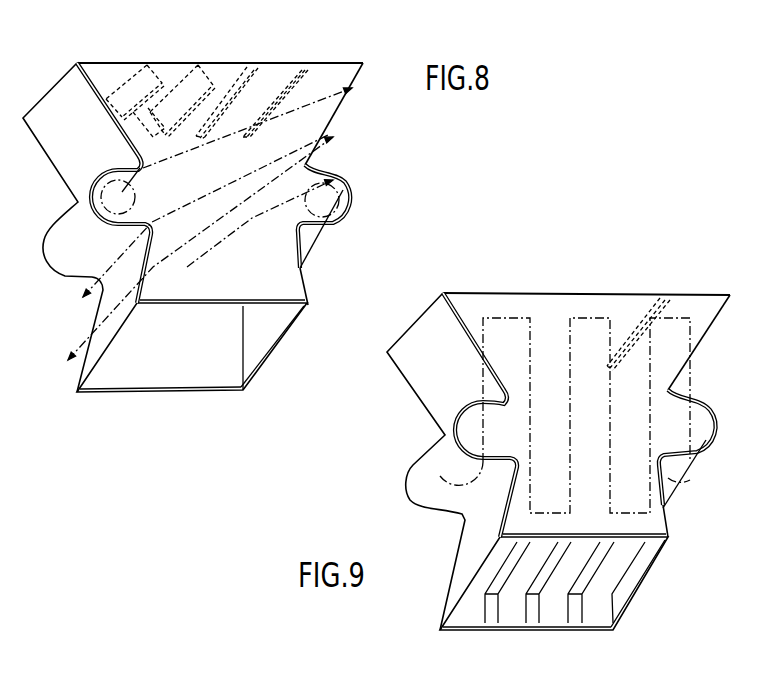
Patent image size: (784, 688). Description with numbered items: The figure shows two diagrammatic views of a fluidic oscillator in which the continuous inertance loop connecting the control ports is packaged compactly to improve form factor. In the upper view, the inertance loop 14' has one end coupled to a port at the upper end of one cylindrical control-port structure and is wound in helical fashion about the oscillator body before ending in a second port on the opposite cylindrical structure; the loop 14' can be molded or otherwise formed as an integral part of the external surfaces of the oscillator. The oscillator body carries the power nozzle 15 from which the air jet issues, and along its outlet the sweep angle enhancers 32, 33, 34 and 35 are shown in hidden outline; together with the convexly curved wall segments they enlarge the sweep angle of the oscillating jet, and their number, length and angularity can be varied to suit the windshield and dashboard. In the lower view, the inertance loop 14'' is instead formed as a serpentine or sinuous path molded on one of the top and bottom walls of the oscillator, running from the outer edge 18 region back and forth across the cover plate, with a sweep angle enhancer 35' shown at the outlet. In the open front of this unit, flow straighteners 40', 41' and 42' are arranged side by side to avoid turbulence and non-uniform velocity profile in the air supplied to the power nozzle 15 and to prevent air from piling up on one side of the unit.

In FIG. 8, the inertance loop 14' is at (205, 227).
In FIG. 8, the power nozzle 15 is at (263, 235).
In FIG. 8, the sweep angle enhancer 32 is at (148, 64).
In FIG. 8, the sweep angle enhancer 33 is at (197, 64).
In FIG. 8, the sweep angle enhancer 34 is at (250, 65).
In FIG. 8, the sweep angle enhancer 35 is at (285, 83).
In FIG. 9, the outer edge 18 is at (553, 294).
In FIG. 9, the inertance loop 14'' is at (609, 415).
In FIG. 9, the sweep angle enhancer 35' is at (638, 314).
In FIG. 9, the flow straightener 40' is at (504, 604).
In FIG. 9, the flow straightener 41' is at (548, 604).
In FIG. 9, the flow straightener 42' is at (605, 604).